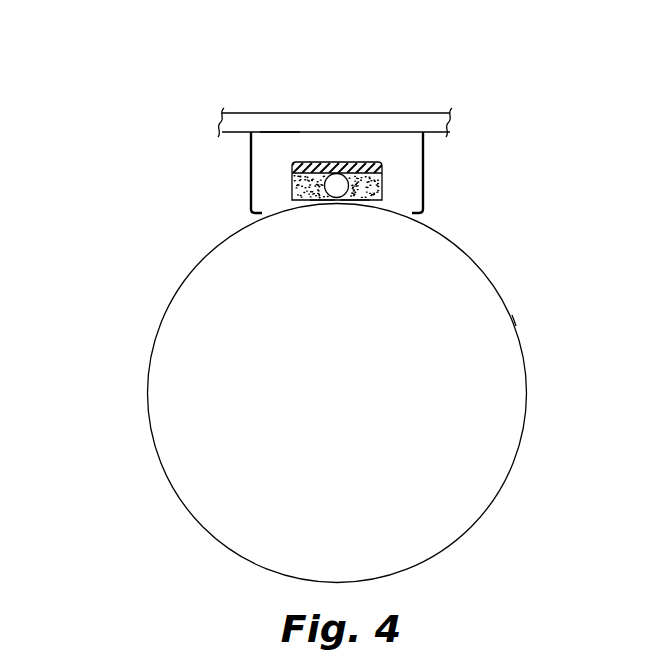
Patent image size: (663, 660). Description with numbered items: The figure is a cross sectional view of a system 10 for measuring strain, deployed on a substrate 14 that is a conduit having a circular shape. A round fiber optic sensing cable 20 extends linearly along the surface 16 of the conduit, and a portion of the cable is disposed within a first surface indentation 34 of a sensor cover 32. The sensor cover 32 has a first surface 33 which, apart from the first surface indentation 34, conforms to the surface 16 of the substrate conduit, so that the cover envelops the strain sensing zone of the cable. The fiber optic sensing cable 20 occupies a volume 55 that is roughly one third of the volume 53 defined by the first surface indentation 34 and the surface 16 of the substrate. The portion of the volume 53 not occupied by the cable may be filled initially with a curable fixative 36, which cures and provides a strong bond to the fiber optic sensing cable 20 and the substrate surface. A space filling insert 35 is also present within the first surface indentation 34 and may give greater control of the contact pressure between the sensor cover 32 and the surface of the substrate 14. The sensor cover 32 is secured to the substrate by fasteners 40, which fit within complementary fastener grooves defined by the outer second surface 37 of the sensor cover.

The system for measuring strain 10 is at (88, 117).
The substrate 14 is at (505, 435).
The surface of the substrate conduit 16 is at (512, 315).
The fiber optic sensing cable 20 is at (338, 190).
The sensor cover 32 is at (250, 182).
The first surface 33 is at (262, 217).
The first surface indentation 34 is at (370, 208).
The space filling insert 35 is at (363, 162).
The curable fixative 36 is at (304, 201).
The second surface 37 is at (282, 148).
The fasteners 40 is at (413, 120).
The volume 53 is at (322, 201).
The volume 55 is at (352, 201).